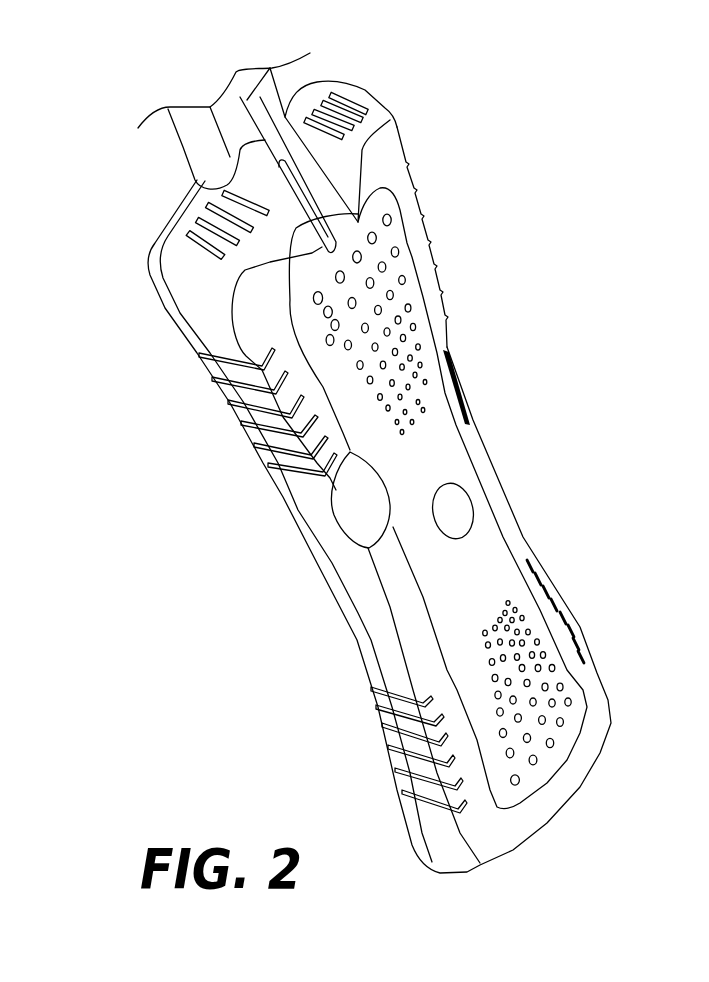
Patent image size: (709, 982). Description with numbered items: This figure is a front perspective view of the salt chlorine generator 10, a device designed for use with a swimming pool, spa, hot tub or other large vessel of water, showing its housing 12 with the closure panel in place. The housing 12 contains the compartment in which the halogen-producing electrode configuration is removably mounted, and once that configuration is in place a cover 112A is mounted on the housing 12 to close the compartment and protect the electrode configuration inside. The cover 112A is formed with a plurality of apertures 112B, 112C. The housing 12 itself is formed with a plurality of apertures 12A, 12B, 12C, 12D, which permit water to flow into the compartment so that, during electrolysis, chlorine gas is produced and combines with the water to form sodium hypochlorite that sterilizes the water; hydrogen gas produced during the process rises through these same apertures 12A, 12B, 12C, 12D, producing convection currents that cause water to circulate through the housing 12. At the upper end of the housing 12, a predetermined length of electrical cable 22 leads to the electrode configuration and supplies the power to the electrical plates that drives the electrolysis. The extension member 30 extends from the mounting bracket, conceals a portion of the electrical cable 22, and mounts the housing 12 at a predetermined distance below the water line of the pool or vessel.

The salt chlorine generator 10 is at (296, 624).
The housing 12 is at (377, 647).
The aperture 12A is at (227, 410).
The aperture 12B is at (375, 735).
The aperture 12C is at (583, 643).
The aperture 12D is at (428, 222).
The electrical cable 22 is at (242, 104).
The extension member 30 is at (190, 148).
The cover 112A is at (477, 570).
The aperture 112B is at (542, 722).
The aperture 112C is at (372, 282).